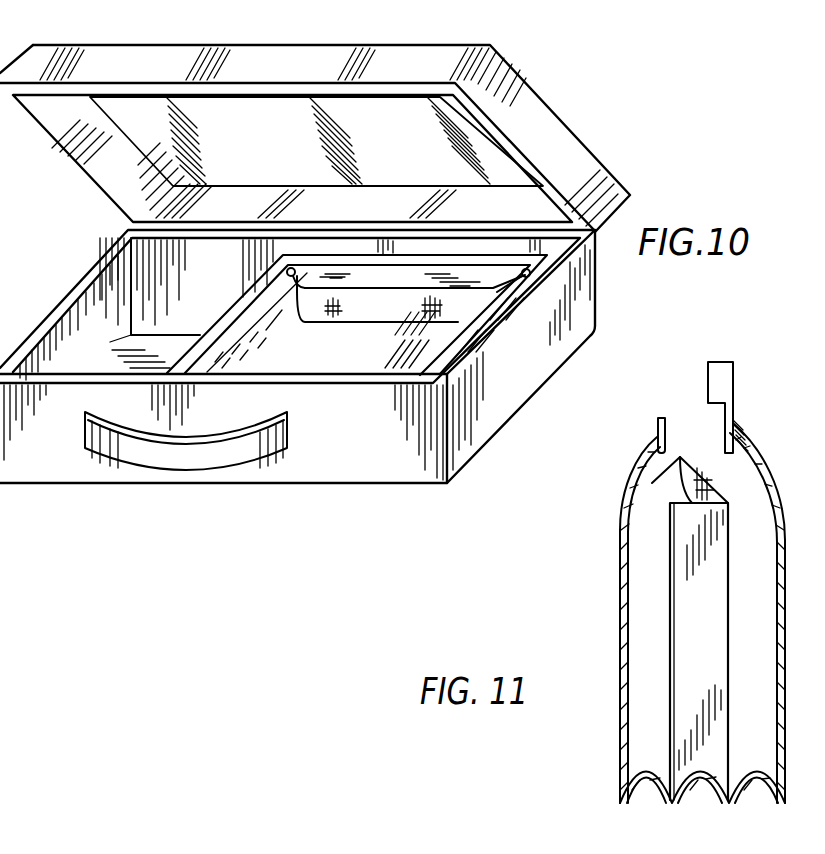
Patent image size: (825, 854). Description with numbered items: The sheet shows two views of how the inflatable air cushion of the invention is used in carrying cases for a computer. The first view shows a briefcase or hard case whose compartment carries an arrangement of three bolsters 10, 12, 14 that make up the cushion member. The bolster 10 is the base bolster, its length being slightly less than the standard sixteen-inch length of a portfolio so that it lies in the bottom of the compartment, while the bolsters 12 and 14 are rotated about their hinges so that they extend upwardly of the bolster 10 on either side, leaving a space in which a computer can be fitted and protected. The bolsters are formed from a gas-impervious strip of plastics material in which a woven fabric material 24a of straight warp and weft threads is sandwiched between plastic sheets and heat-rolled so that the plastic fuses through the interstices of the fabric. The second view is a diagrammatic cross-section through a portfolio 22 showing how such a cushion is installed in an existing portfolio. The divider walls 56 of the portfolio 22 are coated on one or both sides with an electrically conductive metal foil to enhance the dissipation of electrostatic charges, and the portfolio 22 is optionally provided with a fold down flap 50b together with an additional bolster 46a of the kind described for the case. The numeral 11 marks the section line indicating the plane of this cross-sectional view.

In FIG. 10, the bolster 10 is at (315, 138).
In FIG. 10, the bolster 12 is at (437, 383).
In FIG. 10, the bolster 14 is at (252, 343).
In FIG. 10, the woven fabric material 24a is at (332, 314).
In FIG. 11, the woven fabric material 24a is at (697, 608).
In FIG. 11, the flap 46a is at (690, 490).
In FIG. 11, the fold down flap 50b is at (722, 486).
In FIG. 11, the divider walls 56 is at (727, 587).
In FIG. 11, the portfolio 22 is at (785, 642).
In FIG. 11, the section line 11 is at (718, 485).